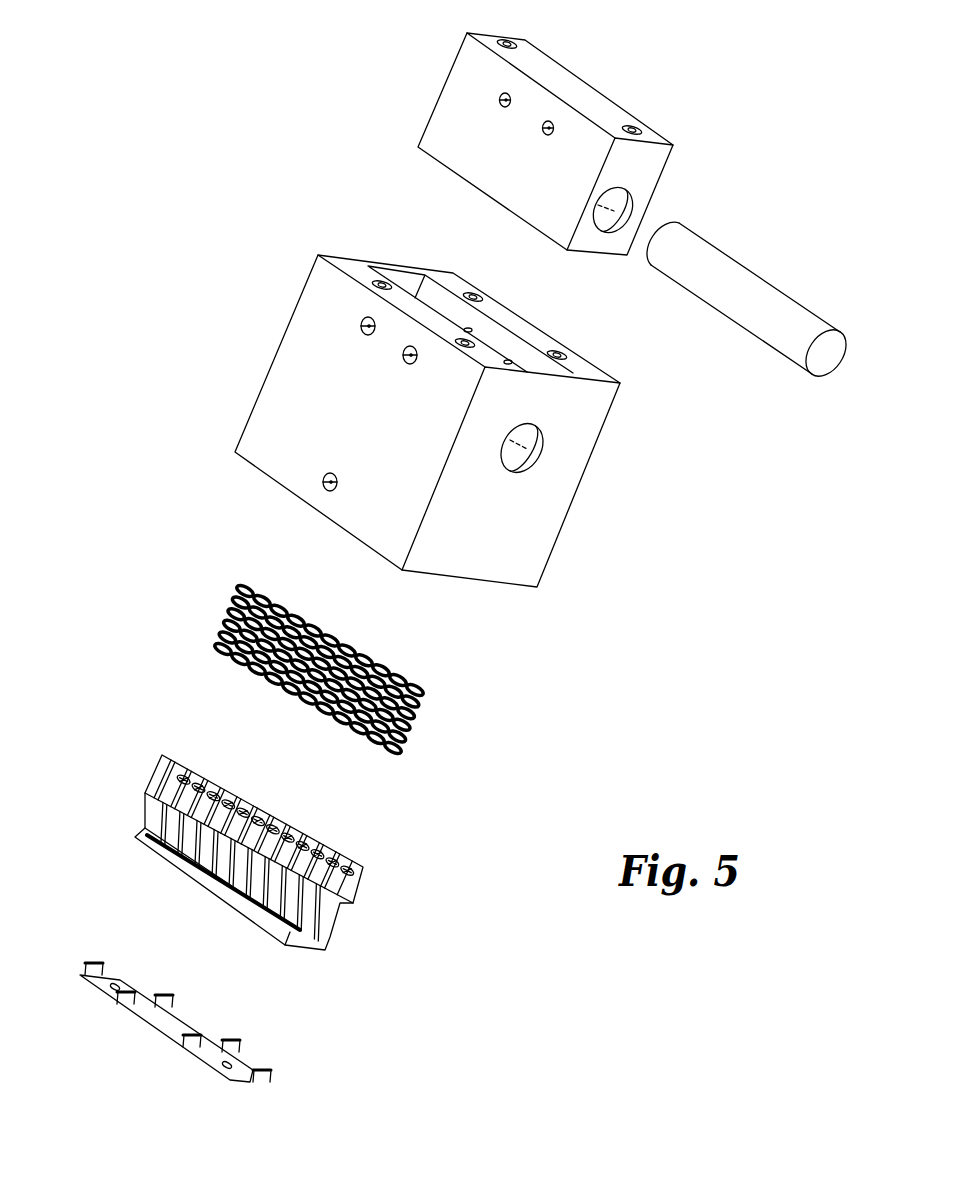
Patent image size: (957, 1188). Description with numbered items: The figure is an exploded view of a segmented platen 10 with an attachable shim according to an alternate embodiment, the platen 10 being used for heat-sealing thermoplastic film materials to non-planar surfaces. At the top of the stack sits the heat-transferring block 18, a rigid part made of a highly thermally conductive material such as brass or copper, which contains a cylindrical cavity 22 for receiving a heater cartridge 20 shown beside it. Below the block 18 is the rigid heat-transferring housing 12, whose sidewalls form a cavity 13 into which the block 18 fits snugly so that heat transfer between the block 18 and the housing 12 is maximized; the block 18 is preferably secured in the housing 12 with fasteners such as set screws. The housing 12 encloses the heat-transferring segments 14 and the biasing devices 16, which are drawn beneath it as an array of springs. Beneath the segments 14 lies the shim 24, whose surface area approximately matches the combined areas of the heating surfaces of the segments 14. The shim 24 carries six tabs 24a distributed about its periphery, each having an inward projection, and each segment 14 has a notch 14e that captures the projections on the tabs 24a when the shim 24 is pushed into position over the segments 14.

The segmented platen 10 is at (179, 90).
The heat-transferring housing 12 is at (190, 471).
The cavity 13 is at (522, 350).
The heat-transferring segments 14 is at (380, 925).
The notch 14e is at (145, 832).
The biasing devices 16 is at (424, 726).
The heat-transferring block 18 is at (620, 103).
The heater cartridge 20 is at (767, 282).
The cavity 22 is at (632, 212).
The shim 24 is at (180, 1023).
The tabs 24a is at (80, 966).